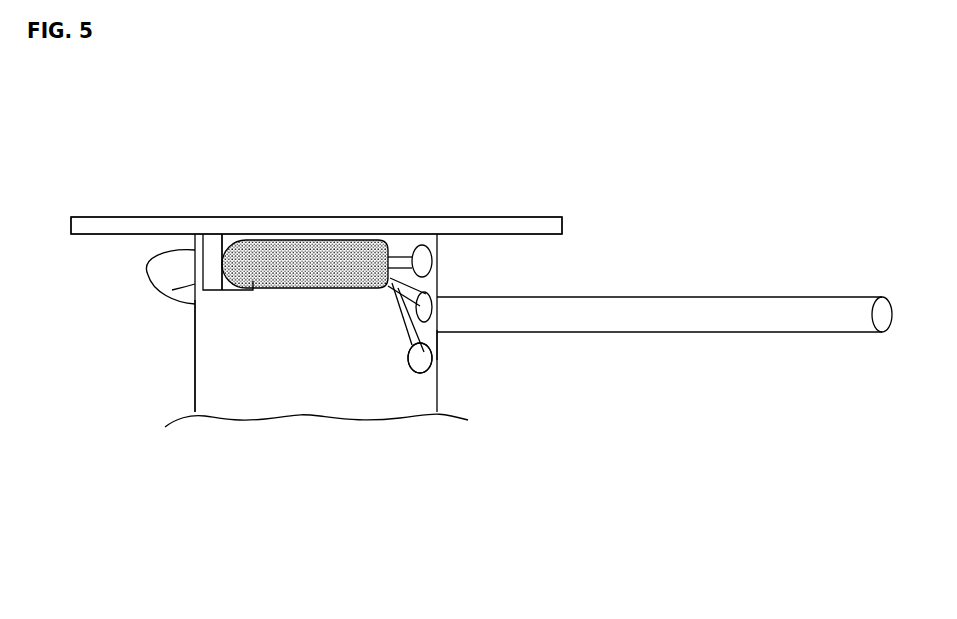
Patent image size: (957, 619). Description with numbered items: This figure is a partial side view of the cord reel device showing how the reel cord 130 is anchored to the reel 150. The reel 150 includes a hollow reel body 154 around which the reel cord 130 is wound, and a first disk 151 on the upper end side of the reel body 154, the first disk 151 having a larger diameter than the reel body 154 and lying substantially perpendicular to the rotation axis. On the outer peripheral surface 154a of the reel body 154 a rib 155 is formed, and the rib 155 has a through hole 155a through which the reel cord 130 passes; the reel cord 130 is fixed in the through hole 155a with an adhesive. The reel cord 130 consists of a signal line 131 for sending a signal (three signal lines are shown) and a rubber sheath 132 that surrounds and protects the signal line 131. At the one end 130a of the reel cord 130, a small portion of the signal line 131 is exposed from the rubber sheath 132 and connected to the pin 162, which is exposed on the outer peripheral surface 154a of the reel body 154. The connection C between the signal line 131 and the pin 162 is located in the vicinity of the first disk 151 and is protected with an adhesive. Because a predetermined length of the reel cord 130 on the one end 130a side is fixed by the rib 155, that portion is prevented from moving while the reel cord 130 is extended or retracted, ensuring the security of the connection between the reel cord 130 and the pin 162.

The reel 150 is at (482, 207).
The first disk 151 is at (510, 227).
The reel body 154 is at (212, 332).
The outer peripheral surface 154a is at (285, 348).
The rib 155 is at (218, 245).
The through hole 155a is at (230, 239).
The rubber sheath 132 is at (287, 252).
The signal line 131 is at (405, 258).
The reel cord 130 is at (650, 297).
The one end of the reel cord 130a is at (441, 264).
The pin 162 is at (420, 340).
The connection C is at (440, 345).